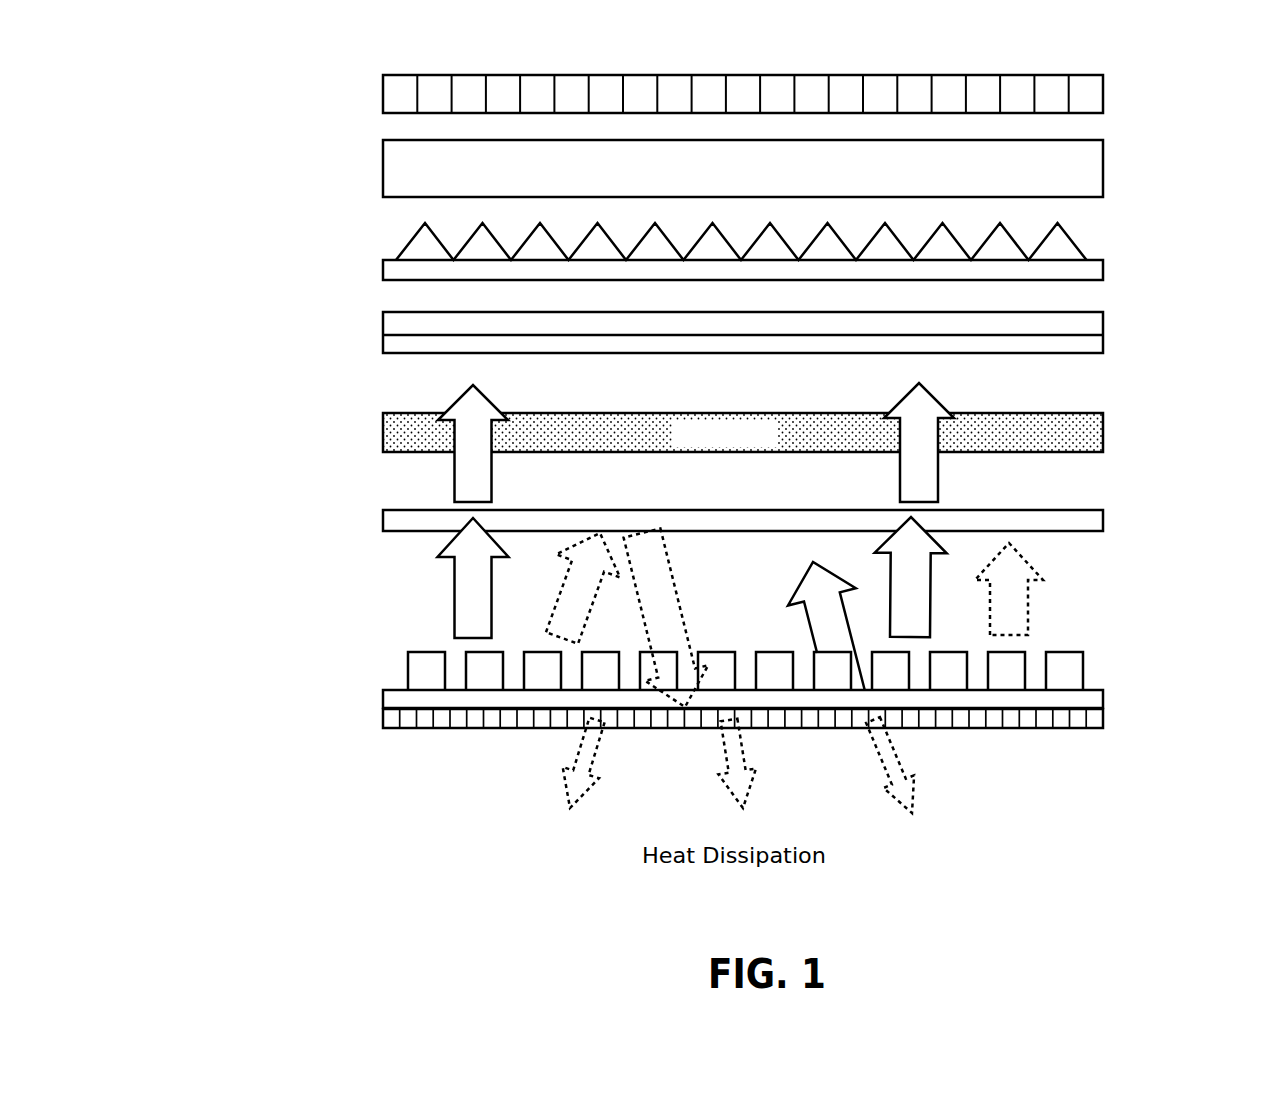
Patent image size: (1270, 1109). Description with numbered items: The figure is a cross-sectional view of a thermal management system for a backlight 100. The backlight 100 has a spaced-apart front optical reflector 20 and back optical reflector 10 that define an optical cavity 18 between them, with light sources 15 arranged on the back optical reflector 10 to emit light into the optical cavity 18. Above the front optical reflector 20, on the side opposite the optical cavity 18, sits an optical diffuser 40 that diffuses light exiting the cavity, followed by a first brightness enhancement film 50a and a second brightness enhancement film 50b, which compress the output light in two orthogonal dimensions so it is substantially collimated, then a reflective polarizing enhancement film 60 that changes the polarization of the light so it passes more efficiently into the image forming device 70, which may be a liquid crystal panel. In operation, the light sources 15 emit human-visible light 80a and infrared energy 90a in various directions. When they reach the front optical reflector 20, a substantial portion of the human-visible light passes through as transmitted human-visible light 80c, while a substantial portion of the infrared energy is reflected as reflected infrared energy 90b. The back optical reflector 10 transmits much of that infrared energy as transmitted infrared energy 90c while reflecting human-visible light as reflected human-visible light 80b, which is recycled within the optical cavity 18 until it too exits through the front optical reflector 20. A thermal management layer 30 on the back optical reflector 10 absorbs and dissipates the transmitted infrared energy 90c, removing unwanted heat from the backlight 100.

The backlight 100 is at (250, 418).
The image forming device 70 is at (1092, 92).
The reflective polarizing enhancement film 60 is at (1092, 170).
The second brightness enhancement film 50b is at (405, 272).
The first brightness enhancement film 50a is at (1105, 337).
The optical diffuser 40 is at (1085, 438).
The front optical reflector 20 is at (383, 522).
The optical cavity 18 is at (1117, 532).
The light source 15 is at (1060, 675).
The back optical reflector 10 is at (385, 698).
The thermal management layer 30 is at (497, 725).
The human-visible light 80a is at (468, 598).
The reflected human-visible light 80b is at (810, 592).
The transmitted human-visible light 80c is at (473, 480).
The infrared energy 90a is at (580, 592).
The reflected infrared energy 90b is at (665, 600).
The transmitted infrared energy 90c is at (589, 759).